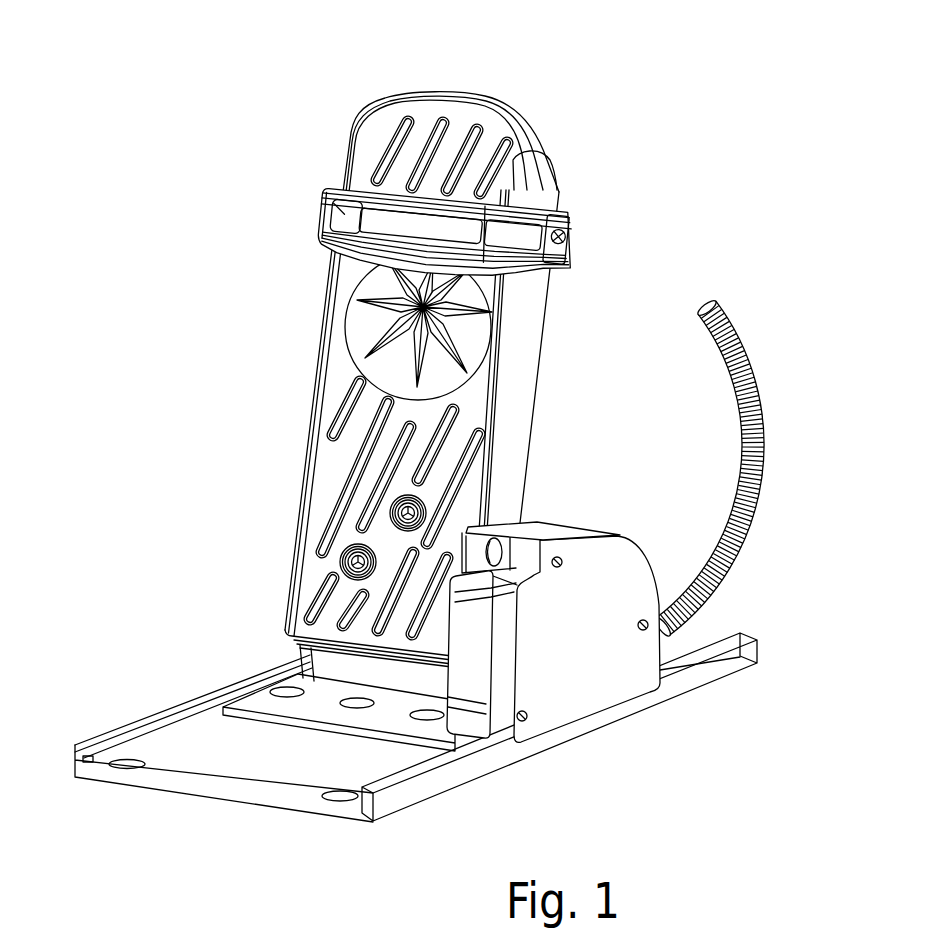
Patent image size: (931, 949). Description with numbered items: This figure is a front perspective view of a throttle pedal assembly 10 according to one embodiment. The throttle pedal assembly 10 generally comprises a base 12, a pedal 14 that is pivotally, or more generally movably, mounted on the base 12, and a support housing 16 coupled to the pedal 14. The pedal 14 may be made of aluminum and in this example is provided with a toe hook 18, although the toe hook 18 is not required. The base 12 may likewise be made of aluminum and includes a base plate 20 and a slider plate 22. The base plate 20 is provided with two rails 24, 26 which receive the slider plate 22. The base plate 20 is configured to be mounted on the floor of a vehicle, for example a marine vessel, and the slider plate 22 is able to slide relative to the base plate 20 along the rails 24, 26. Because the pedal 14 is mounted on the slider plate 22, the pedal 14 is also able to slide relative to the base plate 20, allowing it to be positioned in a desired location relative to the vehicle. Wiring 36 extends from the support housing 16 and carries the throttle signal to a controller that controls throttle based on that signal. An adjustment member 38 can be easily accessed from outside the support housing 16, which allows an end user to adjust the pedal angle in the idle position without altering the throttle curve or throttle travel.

The throttle pedal assembly 10 is at (140, 158).
The base 12 is at (394, 702).
The pedal 14 is at (318, 353).
The support housing 16 is at (564, 562).
The toe hook 18 is at (333, 186).
The base plate 20 is at (238, 773).
The slider plate 22 is at (305, 680).
The rail 24 is at (120, 737).
The rail 26 is at (443, 763).
The wiring 36 is at (758, 412).
The adjustment member 38 is at (491, 546).